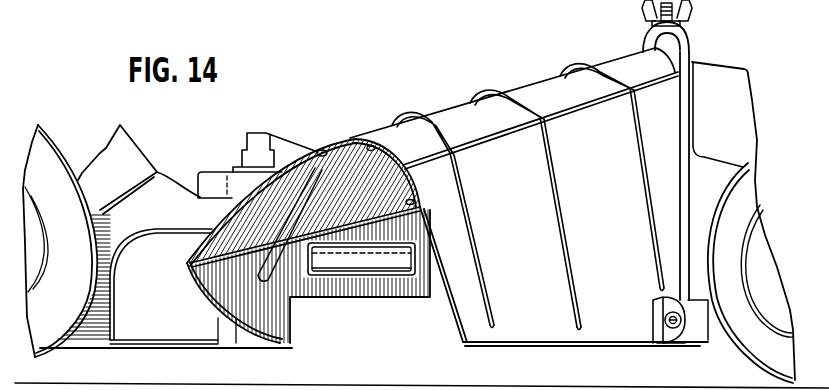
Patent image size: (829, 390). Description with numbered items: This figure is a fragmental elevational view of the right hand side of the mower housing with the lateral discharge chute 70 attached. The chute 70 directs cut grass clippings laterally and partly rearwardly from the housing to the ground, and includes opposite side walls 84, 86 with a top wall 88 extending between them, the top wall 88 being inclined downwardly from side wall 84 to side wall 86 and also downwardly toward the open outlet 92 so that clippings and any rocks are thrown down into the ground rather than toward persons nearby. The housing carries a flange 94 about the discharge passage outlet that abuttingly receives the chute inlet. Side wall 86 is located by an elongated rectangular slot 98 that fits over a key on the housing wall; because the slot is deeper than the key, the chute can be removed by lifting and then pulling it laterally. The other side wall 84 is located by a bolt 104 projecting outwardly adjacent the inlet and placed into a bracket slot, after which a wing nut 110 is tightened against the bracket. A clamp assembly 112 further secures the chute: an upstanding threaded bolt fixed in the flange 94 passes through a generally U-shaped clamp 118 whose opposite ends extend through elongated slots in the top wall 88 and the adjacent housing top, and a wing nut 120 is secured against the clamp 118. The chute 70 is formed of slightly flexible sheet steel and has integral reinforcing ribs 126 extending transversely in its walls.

The lateral discharge chute 70 is at (597, 177).
The side wall 84 is at (548, 330).
The side wall 86 is at (273, 318).
The top wall 88 is at (318, 152).
The outlet 92 is at (410, 202).
The flange 94 is at (692, 72).
The elongated slot 98 is at (362, 277).
The bolt 104 is at (660, 315).
The wing nut 110 is at (677, 337).
The clamp assembly 112 is at (702, 21).
The U-shaped clamp 118 is at (692, 43).
The wing nut 120 is at (690, 4).
The reinforcing ribs 126 is at (565, 288).